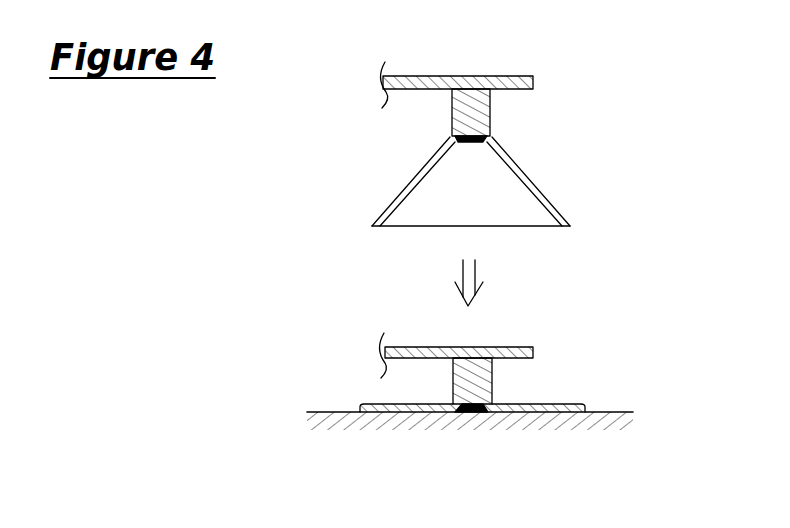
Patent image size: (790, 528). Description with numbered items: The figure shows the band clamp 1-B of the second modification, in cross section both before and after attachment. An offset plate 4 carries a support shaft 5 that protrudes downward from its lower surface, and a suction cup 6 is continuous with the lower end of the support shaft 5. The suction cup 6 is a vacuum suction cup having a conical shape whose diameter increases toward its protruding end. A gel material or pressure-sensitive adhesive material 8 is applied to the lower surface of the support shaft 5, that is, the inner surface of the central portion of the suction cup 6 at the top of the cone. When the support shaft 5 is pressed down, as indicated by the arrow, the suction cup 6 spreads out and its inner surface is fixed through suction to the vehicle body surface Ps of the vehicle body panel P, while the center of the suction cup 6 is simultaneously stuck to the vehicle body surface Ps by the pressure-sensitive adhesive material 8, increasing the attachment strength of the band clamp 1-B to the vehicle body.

The band clamp 1-B is at (596, 35).
The offset plate 4 is at (430, 82).
The support shaft 5 is at (478, 108).
The suction cup 6 is at (537, 188).
The pressure-sensitive adhesive material 8 is at (470, 143).
The vehicle body surface Ps is at (322, 413).
The vehicle body panel P is at (355, 418).